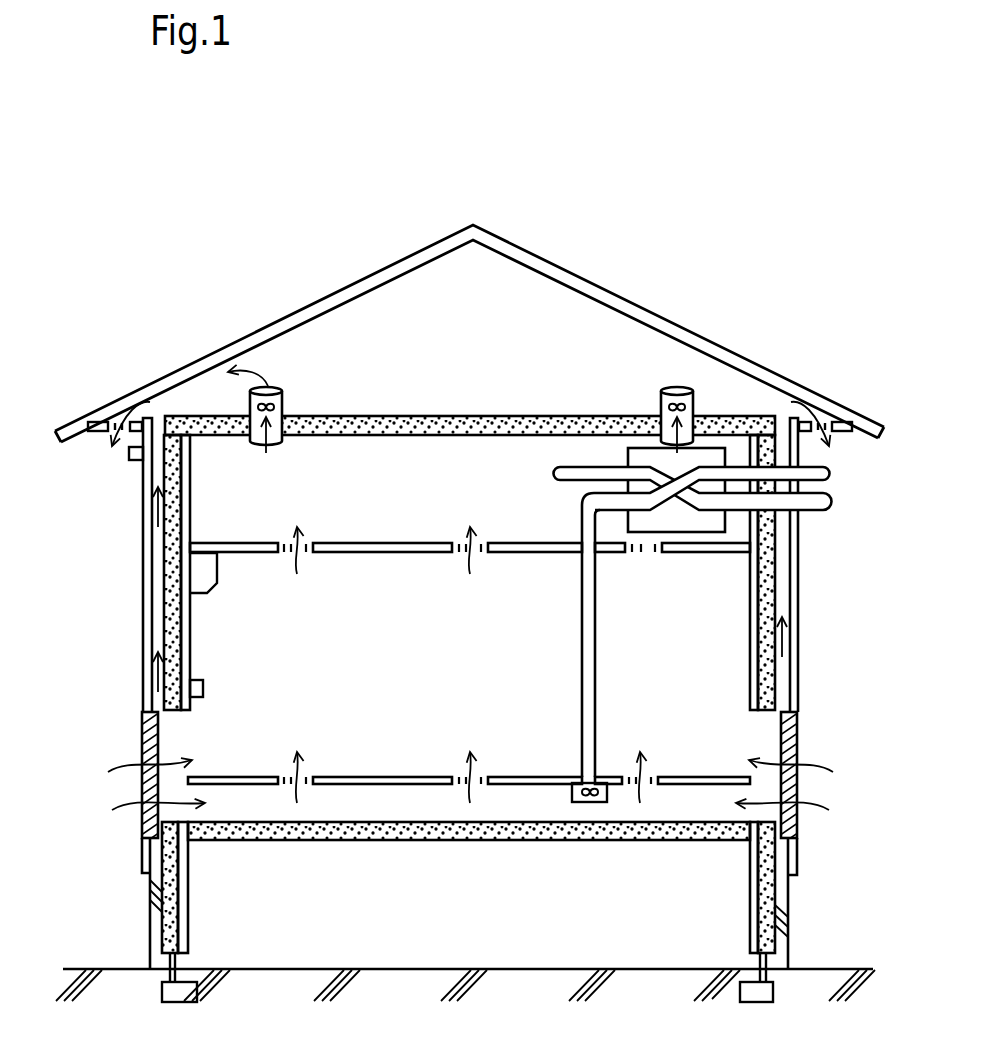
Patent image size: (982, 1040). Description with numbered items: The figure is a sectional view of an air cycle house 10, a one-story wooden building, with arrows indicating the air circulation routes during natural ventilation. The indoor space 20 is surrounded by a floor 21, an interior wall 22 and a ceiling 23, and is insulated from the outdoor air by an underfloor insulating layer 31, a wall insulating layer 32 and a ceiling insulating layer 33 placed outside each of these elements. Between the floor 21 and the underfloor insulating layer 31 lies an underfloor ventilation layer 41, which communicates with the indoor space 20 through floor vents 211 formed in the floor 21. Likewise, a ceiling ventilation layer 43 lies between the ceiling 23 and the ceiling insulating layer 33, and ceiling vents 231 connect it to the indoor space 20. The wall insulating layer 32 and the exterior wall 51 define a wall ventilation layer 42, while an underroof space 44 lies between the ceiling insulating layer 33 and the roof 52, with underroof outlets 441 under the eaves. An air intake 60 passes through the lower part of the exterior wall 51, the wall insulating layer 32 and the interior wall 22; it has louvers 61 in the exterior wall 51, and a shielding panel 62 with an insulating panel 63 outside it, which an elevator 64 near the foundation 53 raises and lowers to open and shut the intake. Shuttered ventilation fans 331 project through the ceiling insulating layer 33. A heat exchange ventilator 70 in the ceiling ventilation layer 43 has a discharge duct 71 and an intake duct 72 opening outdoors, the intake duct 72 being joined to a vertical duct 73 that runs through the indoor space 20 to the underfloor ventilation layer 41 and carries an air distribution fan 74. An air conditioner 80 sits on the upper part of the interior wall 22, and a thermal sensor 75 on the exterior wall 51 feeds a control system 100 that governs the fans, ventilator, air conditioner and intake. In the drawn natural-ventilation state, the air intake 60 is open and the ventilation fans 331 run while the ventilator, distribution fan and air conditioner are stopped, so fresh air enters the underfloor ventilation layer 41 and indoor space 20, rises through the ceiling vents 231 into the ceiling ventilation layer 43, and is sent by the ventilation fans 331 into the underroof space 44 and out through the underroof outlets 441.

The air cycle house 10 is at (294, 190).
The indoor space 20 is at (365, 670).
The floor 21 is at (370, 777).
The floor vents 211 is at (283, 775).
The interior wall 22 is at (190, 663).
The ceiling 23 is at (362, 553).
The ceiling vents 231 is at (283, 556).
The underfloor insulating layer 31 is at (360, 840).
The wall insulating layer 32 is at (172, 595).
The ceiling insulating layer 33 is at (432, 425).
The ventilation fans 331 is at (283, 402).
The underfloor ventilation layer 41 is at (511, 806).
The wall ventilation layer 42 is at (157, 625).
The ceiling ventilation layer 43 is at (440, 497).
The underroof space 44 is at (474, 308).
The underroof outlets 441 is at (110, 422).
The exterior wall 51 is at (143, 530).
The roof 52 is at (388, 268).
The foundation 53 is at (148, 955).
The air intake 60 is at (137, 742).
The louvers 61 is at (142, 822).
The shielding panel 62 is at (170, 885).
The insulating panel 63 is at (152, 890).
The elevator 64 is at (185, 987).
The heat exchange ventilator 70 is at (624, 488).
The discharge duct 71 is at (815, 505).
The intake duct 72 is at (815, 478).
The vertical duct 73 is at (582, 660).
The air distribution fan 74 is at (590, 802).
The thermal sensor 75 is at (137, 462).
The air conditioner 80 is at (197, 573).
The control system 100 is at (203, 690).